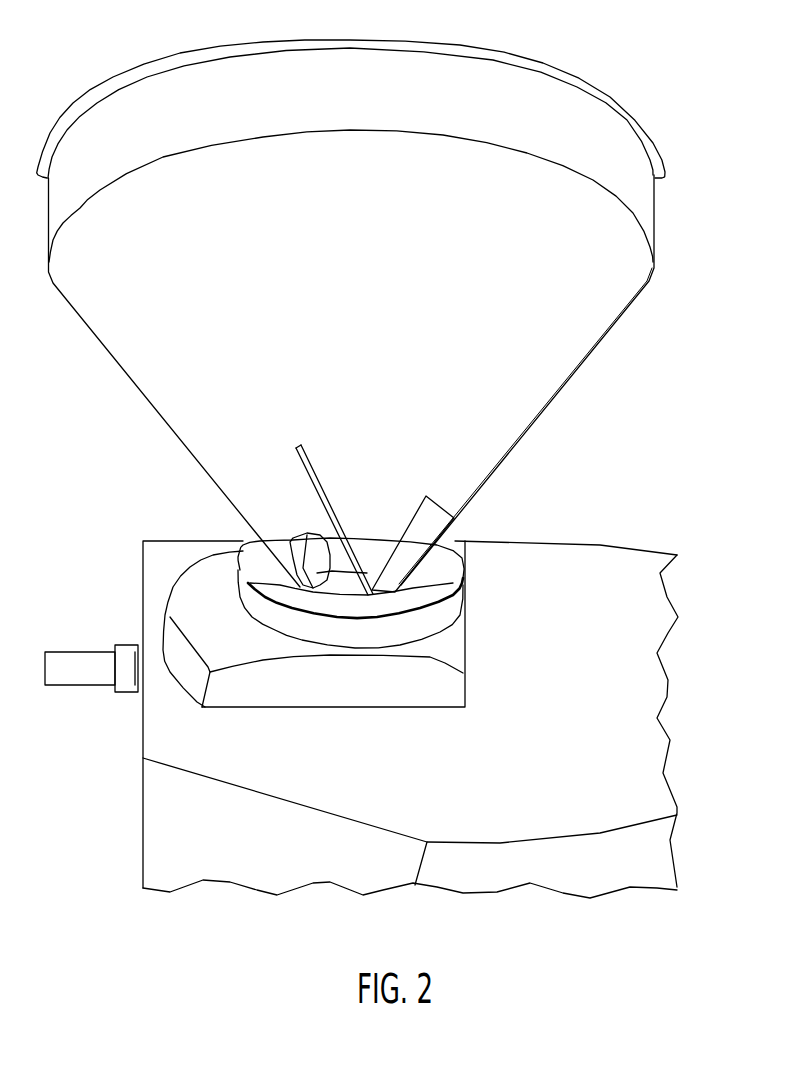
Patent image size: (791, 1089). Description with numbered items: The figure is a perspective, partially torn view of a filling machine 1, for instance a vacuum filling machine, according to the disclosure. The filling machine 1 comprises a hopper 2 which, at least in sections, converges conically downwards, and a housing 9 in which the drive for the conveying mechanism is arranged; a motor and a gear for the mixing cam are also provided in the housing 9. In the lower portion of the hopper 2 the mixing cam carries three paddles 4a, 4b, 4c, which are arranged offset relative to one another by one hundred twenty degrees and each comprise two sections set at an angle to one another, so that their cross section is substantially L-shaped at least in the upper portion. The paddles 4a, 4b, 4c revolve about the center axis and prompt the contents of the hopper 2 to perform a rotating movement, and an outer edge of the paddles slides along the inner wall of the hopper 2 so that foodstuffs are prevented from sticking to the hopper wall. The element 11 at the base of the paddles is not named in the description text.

The filling machine 1 is at (633, 76).
The hopper 2 is at (351, 313).
The paddle 4a is at (301, 539).
The paddle 4b is at (334, 520).
The paddle 4c is at (413, 519).
The housing 9 is at (361, 698).
The receiving ring 11 is at (381, 595).